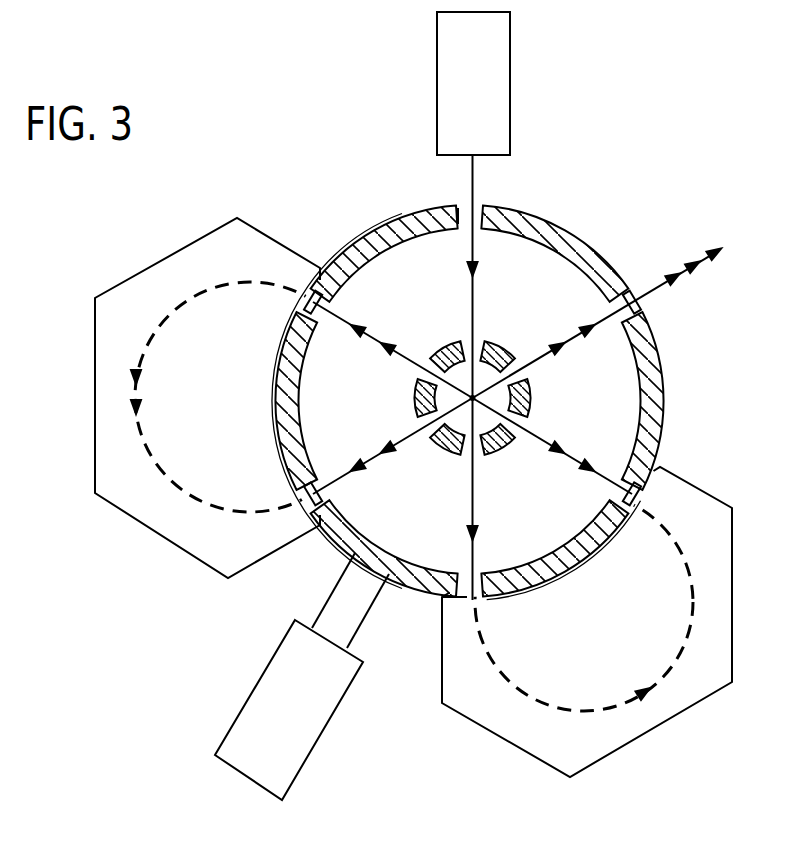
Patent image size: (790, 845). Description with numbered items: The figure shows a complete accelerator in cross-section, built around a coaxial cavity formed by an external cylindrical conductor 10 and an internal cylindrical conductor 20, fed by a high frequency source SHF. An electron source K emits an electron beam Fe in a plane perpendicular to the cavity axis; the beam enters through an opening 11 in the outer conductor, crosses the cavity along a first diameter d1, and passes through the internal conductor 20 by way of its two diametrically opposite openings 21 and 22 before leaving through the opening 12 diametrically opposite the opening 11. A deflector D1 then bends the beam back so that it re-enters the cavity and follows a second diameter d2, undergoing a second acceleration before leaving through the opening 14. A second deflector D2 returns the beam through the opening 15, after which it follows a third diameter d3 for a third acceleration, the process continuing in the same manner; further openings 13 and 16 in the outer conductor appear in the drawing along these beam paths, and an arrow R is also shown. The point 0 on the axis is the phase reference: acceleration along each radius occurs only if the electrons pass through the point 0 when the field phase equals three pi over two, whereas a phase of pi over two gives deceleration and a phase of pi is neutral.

The point of the plane Pm on the axis 0 is at (488, 368).
The external cylindrical conductor 10 is at (380, 233).
The opening 11 is at (466, 211).
The opening 12 is at (466, 600).
The window 13 is at (650, 490).
The opening 14 is at (306, 297).
The opening 15 is at (306, 506).
The window 16 is at (632, 298).
The internal cylindrical conductor 20 is at (492, 457).
The opening 21 is at (462, 343).
The opening 22 is at (466, 457).
The electron source K is at (487, 38).
The electron beam Fe is at (476, 173).
The direction of rotation R is at (667, 344).
The first diameter d1 is at (474, 298).
The second diameter d2 is at (534, 436).
The third diameter d3 is at (410, 435).
The electron deflector D1 is at (620, 646).
The electron deflector D2 is at (230, 411).
The high frequency source SHF is at (258, 730).